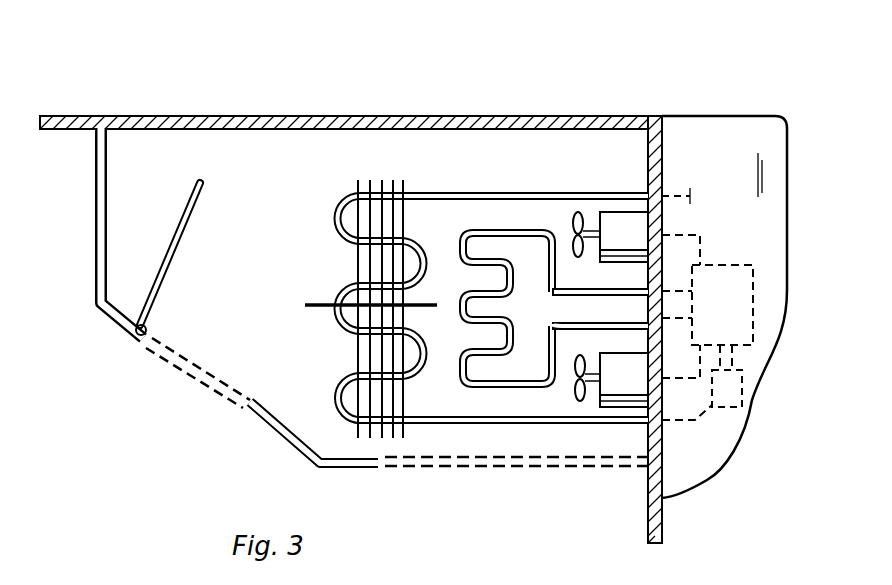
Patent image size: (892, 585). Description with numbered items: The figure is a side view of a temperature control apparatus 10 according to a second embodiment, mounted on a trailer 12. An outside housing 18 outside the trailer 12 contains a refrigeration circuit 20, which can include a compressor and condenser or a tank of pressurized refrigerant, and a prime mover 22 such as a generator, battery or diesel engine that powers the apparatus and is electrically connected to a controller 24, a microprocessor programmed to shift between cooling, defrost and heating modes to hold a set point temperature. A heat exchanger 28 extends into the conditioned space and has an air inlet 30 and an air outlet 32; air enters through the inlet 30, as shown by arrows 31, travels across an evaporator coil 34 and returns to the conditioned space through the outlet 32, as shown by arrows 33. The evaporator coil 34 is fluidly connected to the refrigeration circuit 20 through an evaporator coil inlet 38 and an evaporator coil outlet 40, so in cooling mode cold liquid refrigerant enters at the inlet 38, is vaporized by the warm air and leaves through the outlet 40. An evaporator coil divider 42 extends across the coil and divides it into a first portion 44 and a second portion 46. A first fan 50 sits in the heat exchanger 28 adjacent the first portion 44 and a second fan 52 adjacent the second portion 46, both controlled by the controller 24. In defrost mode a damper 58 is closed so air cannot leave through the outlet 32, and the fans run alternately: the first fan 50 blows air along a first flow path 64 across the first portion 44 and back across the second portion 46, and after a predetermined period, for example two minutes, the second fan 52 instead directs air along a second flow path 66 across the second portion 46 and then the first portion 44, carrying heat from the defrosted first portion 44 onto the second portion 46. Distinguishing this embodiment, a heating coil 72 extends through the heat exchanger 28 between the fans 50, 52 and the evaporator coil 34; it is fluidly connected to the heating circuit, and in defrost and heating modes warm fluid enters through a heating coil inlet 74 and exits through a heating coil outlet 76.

The temperature control apparatus 10 is at (663, 82).
The trailer 12 is at (278, 114).
The outside housing 18 is at (765, 184).
The refrigeration circuit 20 is at (675, 187).
The prime mover 22 is at (742, 388).
The controller 24 is at (738, 321).
The heat exchanger 28 is at (95, 184).
The air inlet 30 is at (577, 448).
The arrows 31 is at (538, 434).
The air outlet 32 is at (128, 382).
The arrows 33 is at (246, 352).
The evaporator coil 34 is at (418, 284).
The evaporator coil inlet 38 is at (640, 428).
The evaporator coil outlet 40 is at (640, 193).
The evaporator coil divider 42 is at (325, 300).
The first portion 44 is at (342, 408).
The second portion 46 is at (340, 203).
The first fan 50 is at (625, 366).
The second fan 52 is at (660, 230).
The damper 58 is at (182, 198).
The first flow path 64 is at (323, 222).
The second flow path 66 is at (415, 215).
The heating coil 72 is at (505, 326).
The heating coil inlet 74 is at (640, 322).
The heating coil outlet 76 is at (640, 288).